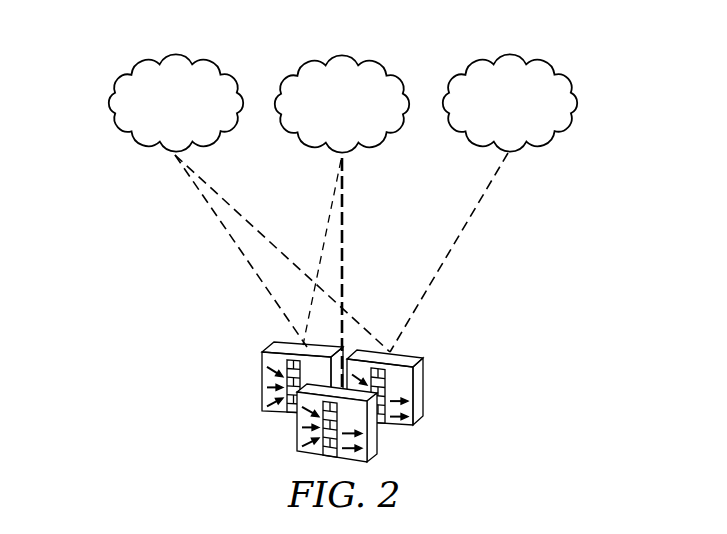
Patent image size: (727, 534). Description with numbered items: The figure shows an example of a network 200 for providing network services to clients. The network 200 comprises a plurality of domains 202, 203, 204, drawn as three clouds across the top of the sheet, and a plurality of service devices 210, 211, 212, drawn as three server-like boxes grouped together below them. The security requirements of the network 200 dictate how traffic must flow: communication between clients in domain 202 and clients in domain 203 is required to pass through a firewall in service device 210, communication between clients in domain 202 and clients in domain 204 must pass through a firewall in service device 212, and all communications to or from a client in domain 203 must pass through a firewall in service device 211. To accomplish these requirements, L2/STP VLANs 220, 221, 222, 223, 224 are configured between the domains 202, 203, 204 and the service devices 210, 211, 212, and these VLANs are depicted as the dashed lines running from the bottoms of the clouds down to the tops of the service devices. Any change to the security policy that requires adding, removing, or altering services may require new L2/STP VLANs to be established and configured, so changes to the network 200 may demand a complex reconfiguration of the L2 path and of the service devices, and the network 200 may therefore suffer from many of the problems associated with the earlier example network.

The network 200 is at (95, 48).
The domain 202 is at (101, 112).
The domain 203 is at (372, 148).
The domain 204 is at (583, 108).
The service device 210 is at (259, 380).
The service device 211 is at (298, 438).
The service device 212 is at (425, 390).
The L2/STP VLAN 220 is at (240, 255).
The L2/STP VLAN 221 is at (328, 206).
The L2/STP VLAN 222 is at (213, 183).
The L2/STP VLAN 223 is at (460, 242).
The L2/STP VLAN 224 is at (345, 240).